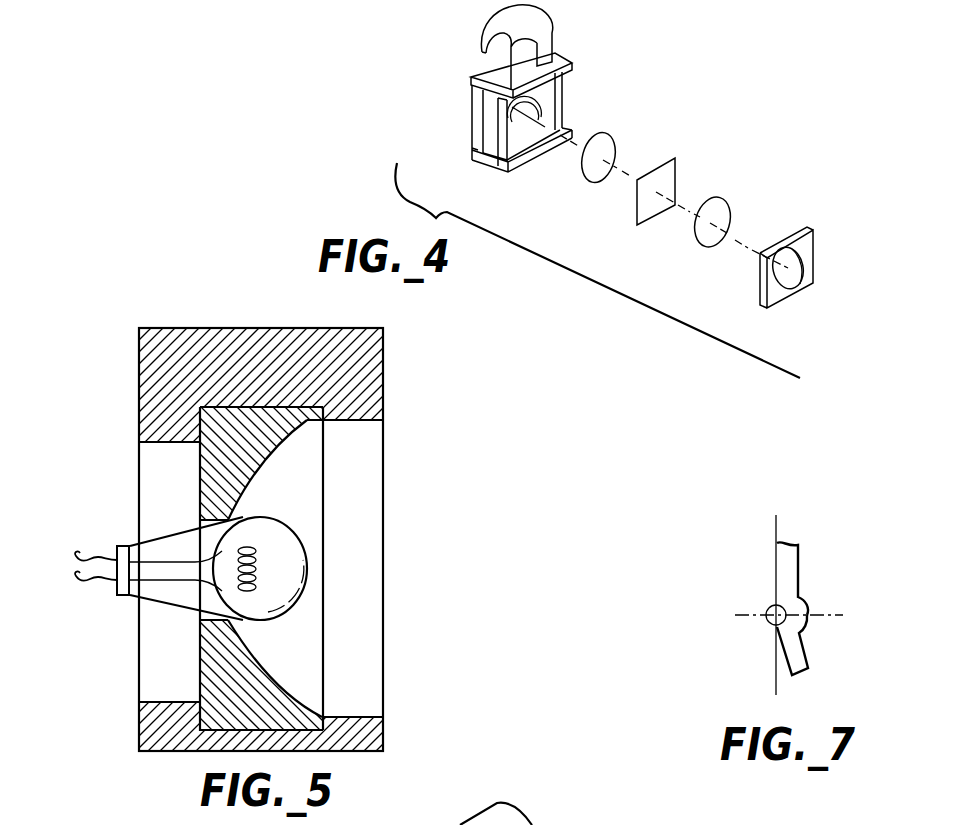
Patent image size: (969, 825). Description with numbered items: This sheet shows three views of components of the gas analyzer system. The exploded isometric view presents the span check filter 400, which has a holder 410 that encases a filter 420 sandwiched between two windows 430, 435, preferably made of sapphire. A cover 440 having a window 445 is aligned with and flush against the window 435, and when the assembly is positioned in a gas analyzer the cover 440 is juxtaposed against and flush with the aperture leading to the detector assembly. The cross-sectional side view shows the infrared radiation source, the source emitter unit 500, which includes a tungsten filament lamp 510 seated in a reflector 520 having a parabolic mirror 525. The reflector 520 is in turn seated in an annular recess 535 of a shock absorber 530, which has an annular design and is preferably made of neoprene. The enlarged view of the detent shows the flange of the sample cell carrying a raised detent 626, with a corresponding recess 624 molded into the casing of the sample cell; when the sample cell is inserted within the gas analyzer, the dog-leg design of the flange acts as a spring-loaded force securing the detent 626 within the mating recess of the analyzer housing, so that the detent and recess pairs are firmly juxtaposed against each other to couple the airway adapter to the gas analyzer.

In FIG. 4, the span check filter 400 is at (498, 195).
In FIG. 4, the holder 410 is at (553, 27).
In FIG. 4, the filter 420 is at (667, 158).
In FIG. 4, the window 430 is at (603, 133).
In FIG. 4, the window 435 is at (722, 197).
In FIG. 4, the cover 440 is at (808, 260).
In FIG. 4, the window 445 is at (795, 278).
In FIG. 5, the source emitter unit 500 is at (440, 537).
In FIG. 5, the tungsten filament lamp 510 is at (283, 553).
In FIG. 5, the reflector 520 is at (212, 500).
In FIG. 5, the parabolic mirror 525 is at (283, 697).
In FIG. 5, the shock absorber 530 is at (139, 402).
In FIG. 5, the annular recess 535 is at (343, 420).
In FIG. 7, the recess 624 is at (799, 628).
In FIG. 7, the detent 626 is at (798, 570).